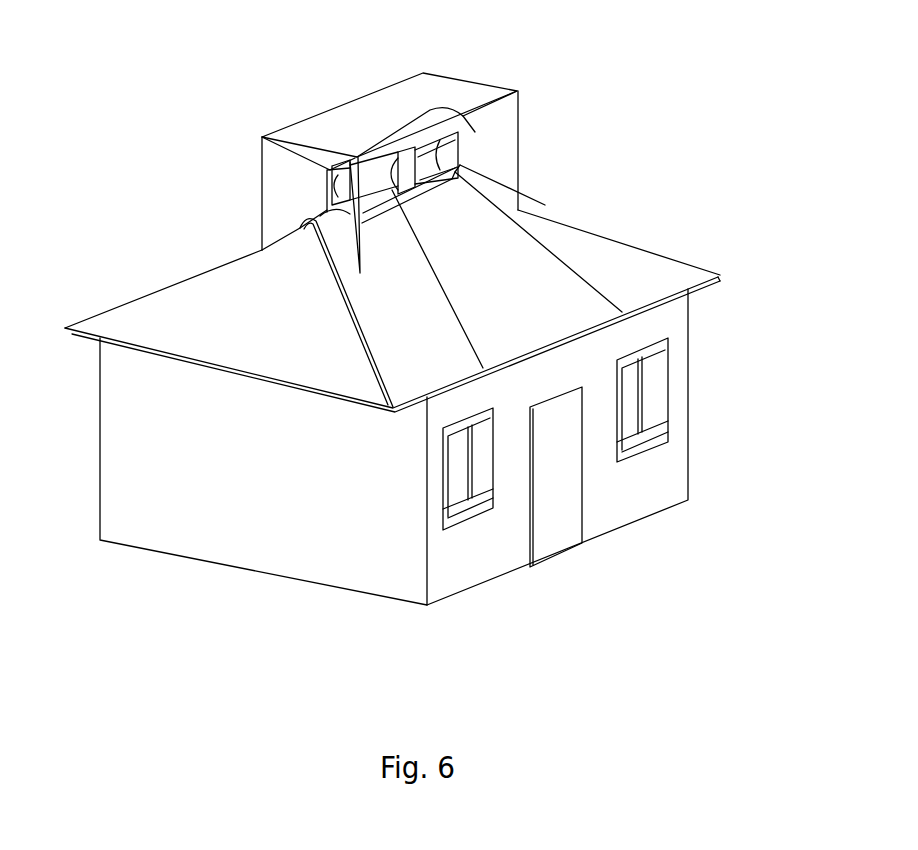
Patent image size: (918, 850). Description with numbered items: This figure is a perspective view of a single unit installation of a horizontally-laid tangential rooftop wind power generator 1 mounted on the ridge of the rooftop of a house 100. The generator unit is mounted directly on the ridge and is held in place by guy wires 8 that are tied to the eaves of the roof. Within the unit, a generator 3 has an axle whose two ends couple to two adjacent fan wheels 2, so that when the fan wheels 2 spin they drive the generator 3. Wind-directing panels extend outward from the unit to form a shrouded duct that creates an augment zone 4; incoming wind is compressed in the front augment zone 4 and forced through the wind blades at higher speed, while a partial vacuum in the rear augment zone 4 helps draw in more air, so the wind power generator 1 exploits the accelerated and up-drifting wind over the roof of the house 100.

The house 100 is at (252, 482).
The guy wires 8 is at (603, 295).
The augment zone 4 is at (275, 115).
The horizontally-laid tangential rooftop wind power generator 1 is at (333, 192).
The fan wheels 2 is at (437, 140).
The generator 3 is at (405, 158).